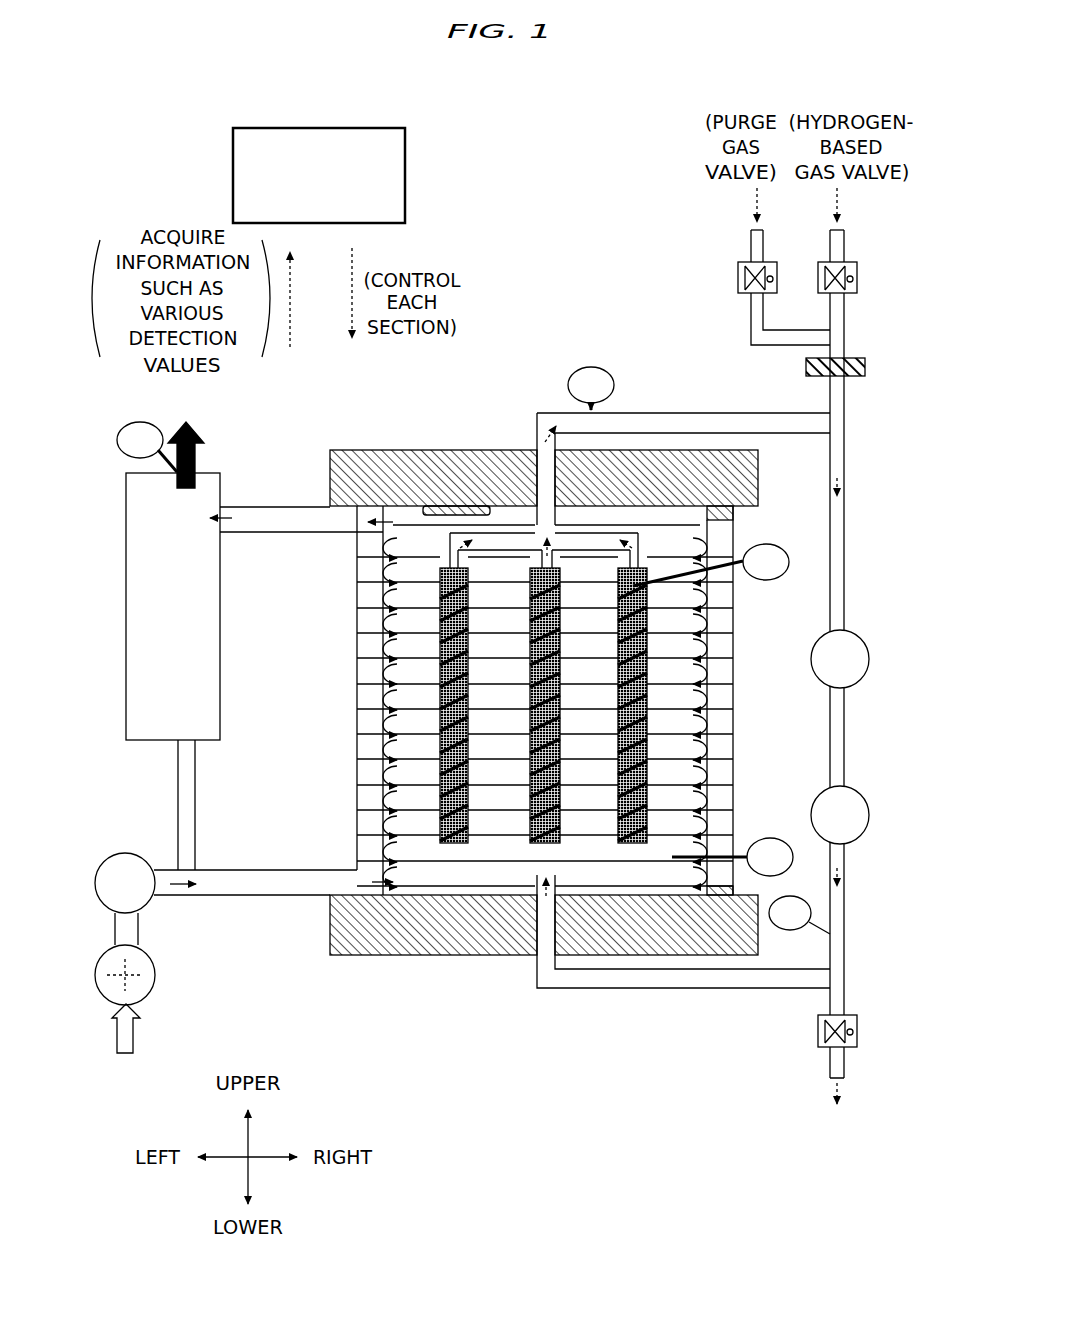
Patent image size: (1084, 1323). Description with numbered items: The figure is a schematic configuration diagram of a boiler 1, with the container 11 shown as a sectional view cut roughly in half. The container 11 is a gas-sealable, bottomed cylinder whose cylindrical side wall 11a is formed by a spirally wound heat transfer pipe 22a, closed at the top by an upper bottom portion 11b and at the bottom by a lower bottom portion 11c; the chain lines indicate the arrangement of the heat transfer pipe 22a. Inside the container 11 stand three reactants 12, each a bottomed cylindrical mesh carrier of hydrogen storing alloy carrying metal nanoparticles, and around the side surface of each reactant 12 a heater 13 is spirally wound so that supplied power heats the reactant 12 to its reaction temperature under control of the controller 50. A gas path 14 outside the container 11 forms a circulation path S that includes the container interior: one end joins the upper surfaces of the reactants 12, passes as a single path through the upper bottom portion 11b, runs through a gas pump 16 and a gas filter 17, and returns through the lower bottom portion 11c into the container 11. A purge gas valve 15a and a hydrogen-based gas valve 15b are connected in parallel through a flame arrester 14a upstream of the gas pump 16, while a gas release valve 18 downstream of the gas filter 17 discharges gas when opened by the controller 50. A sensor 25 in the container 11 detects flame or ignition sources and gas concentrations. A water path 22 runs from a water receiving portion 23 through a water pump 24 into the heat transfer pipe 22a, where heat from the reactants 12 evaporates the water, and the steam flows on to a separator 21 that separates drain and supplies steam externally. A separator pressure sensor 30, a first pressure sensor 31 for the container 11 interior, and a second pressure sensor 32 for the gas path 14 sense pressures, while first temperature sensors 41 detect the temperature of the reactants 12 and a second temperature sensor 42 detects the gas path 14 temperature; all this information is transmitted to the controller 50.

The boiler 1 is at (872, 40).
The container 11 is at (520, 700).
The side wall 11a is at (357, 697).
The upper bottom portion 11b is at (357, 452).
The lower bottom portion 11c is at (357, 955).
The reactant 12 is at (452, 845).
The heater 13 is at (458, 845).
The gas path 14 is at (697, 413).
The flame arrester 14a is at (853, 376).
The purge gas valve 15a is at (738, 273).
The hydrogen-based gas valve 15b is at (857, 273).
The gas pump 16 is at (817, 638).
The gas filter 17 is at (817, 790).
The gas release valve 18 is at (818, 1036).
The separator 21 is at (220, 673).
The water path 22 is at (235, 533).
The heat transfer pipe 22a is at (585, 862).
The water receiving portion 23 is at (153, 983).
The water pump 24 is at (130, 855).
The sensor 25 is at (460, 506).
The separator pressure sensor 30 is at (125, 427).
The first pressure sensor 31 is at (772, 838).
The second pressure sensor 32 is at (575, 372).
The first temperature sensor 41 is at (770, 545).
The second temperature sensor 42 is at (790, 930).
The controller 50 is at (405, 170).
The circulation path S is at (655, 382).